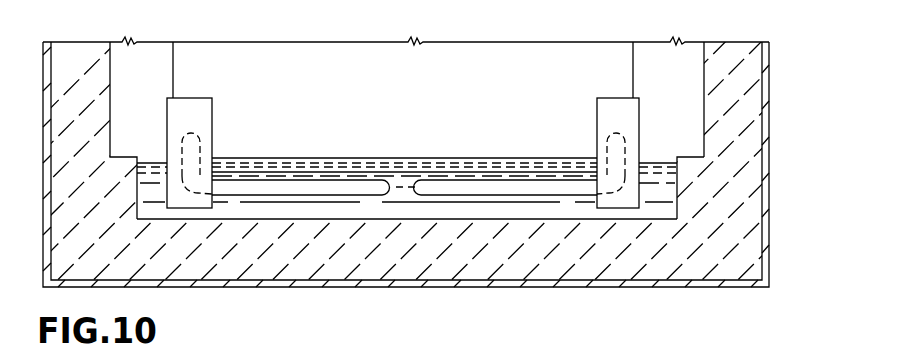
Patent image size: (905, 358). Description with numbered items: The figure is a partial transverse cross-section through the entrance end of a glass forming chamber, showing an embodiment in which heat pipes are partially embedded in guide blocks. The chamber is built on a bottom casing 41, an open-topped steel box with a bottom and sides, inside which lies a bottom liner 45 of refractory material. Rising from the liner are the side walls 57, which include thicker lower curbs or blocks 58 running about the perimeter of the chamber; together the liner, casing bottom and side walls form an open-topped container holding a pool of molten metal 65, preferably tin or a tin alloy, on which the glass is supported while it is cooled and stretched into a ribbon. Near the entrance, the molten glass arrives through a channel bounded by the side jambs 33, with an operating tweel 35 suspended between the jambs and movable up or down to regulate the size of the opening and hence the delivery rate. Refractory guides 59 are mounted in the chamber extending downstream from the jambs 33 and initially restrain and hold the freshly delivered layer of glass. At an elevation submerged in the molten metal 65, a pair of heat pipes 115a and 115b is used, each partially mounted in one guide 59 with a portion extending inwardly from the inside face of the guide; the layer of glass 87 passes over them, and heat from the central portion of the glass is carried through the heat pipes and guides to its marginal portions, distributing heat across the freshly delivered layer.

The side jamb 33 is at (153, 53).
The operating tweel 35 is at (440, 48).
The bottom casing 41 is at (763, 174).
The bottom liner 45 is at (488, 262).
The side wall 57 is at (732, 44).
The lower curb or block 58 is at (688, 158).
The refractory guide 59 is at (197, 98).
The pool of molten metal 65 is at (395, 212).
The liquid layer 87 is at (346, 163).
The heat pipe 115a is at (363, 182).
The heat pipe 115b is at (465, 180).